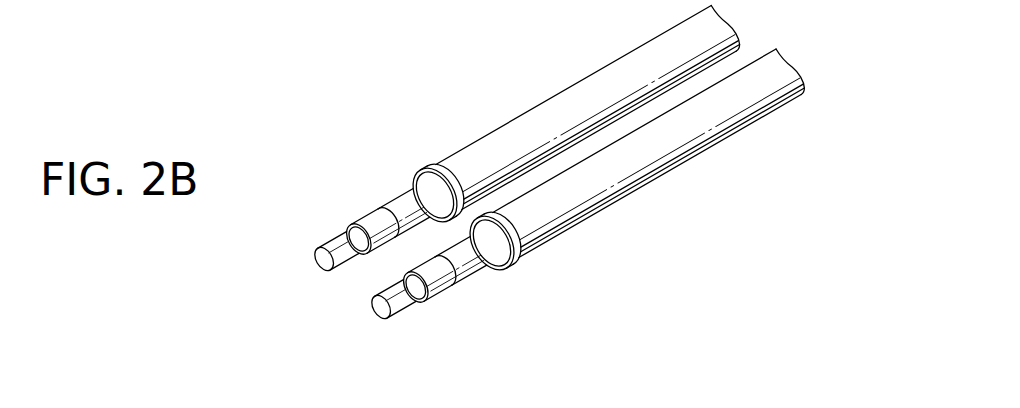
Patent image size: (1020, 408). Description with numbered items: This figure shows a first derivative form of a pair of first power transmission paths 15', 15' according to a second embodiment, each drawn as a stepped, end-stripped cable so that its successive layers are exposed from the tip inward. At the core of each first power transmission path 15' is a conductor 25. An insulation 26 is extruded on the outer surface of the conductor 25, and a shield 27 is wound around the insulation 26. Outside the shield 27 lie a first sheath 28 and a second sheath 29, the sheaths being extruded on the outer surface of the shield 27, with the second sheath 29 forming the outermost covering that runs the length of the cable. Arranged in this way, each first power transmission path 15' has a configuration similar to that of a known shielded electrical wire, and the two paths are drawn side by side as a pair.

The first power transmission path 15' is at (545, 186).
The conductor 25 is at (335, 248).
The insulation 26 is at (366, 219).
The shield 27 is at (396, 200).
The first sheath 28 is at (424, 182).
The second sheath 29 is at (547, 117).